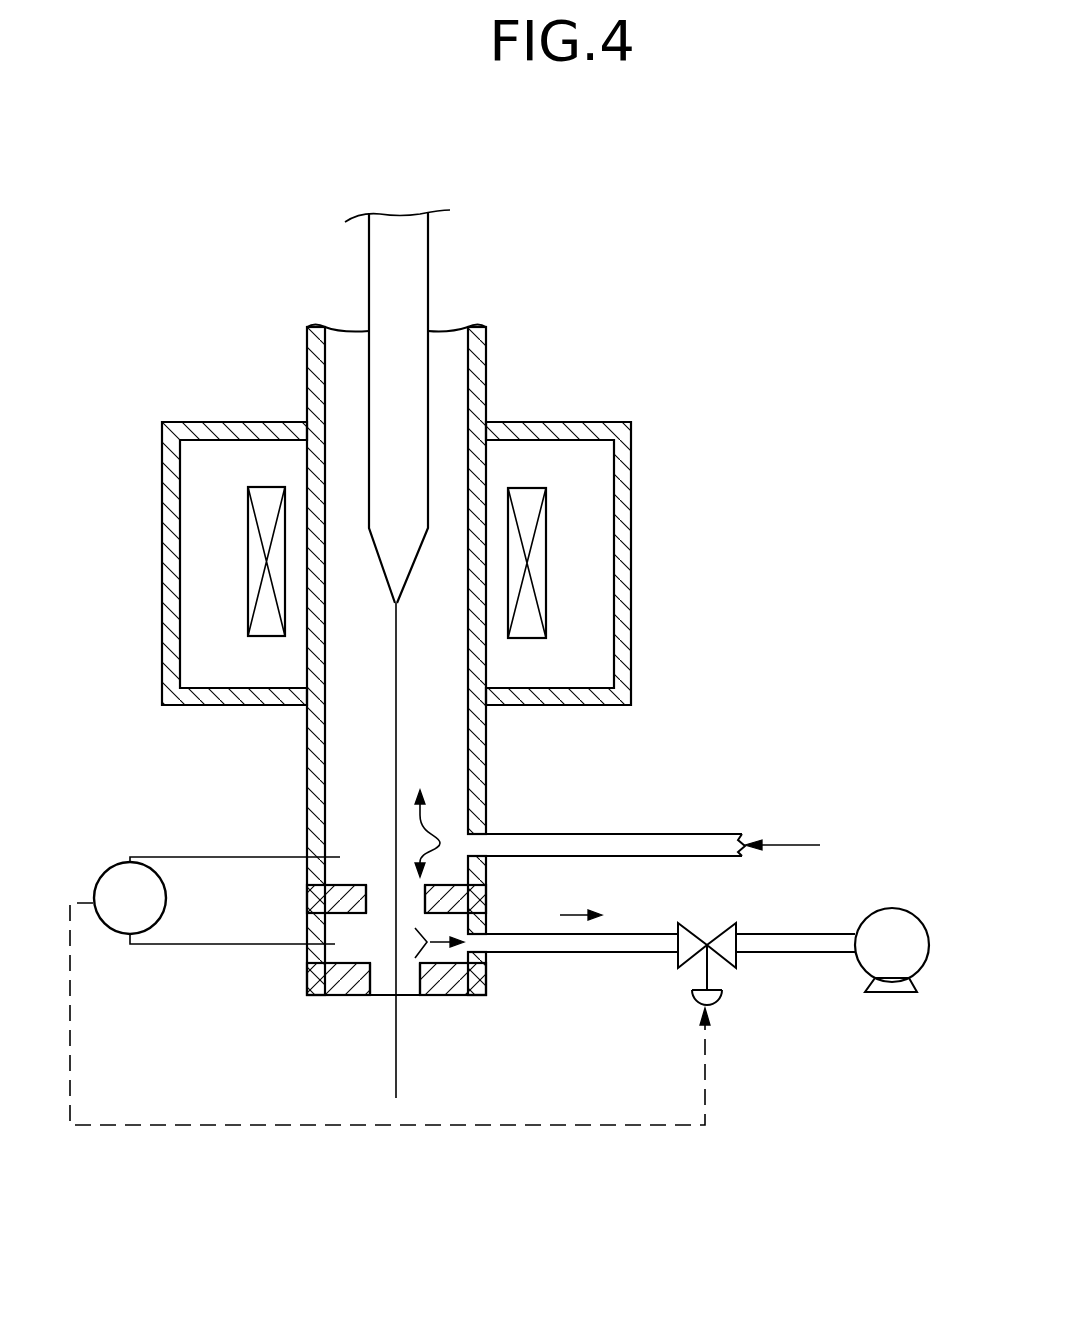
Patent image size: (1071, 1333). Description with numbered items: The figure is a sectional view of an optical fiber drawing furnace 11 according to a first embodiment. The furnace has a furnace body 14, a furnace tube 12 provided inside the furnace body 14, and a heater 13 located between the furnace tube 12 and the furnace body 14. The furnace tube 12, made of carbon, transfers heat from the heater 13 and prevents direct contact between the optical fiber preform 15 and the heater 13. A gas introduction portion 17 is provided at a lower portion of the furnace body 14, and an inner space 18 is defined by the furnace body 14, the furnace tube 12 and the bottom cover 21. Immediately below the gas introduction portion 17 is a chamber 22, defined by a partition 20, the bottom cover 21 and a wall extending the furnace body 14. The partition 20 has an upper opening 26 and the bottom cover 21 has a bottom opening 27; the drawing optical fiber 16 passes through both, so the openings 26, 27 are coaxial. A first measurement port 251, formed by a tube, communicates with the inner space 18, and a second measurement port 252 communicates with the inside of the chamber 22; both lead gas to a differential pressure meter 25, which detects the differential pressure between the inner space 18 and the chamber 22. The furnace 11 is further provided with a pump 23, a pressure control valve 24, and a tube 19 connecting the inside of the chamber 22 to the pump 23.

The optical fiber drawing furnace 11 is at (797, 318).
The furnace tube 12 is at (483, 465).
The heater 13 is at (546, 553).
The furnace body 14 is at (623, 650).
The optical fiber preform 15 is at (415, 272).
The drawing optical fiber 16 is at (397, 1079).
The gas introduction portion 17 is at (570, 843).
The inner space 18 is at (443, 727).
The tube 19 is at (490, 942).
The partition 20 is at (483, 897).
The bottom cover 21 is at (453, 1000).
The chamber 22 is at (307, 953).
The pump 23 is at (862, 967).
The pressure control valve 24 is at (713, 930).
The differential pressure meter 25 is at (120, 858).
The first measurement port 251 is at (230, 857).
The second measurement port 252 is at (232, 943).
The upper opening 26 is at (377, 917).
The bottom opening 27 is at (383, 990).